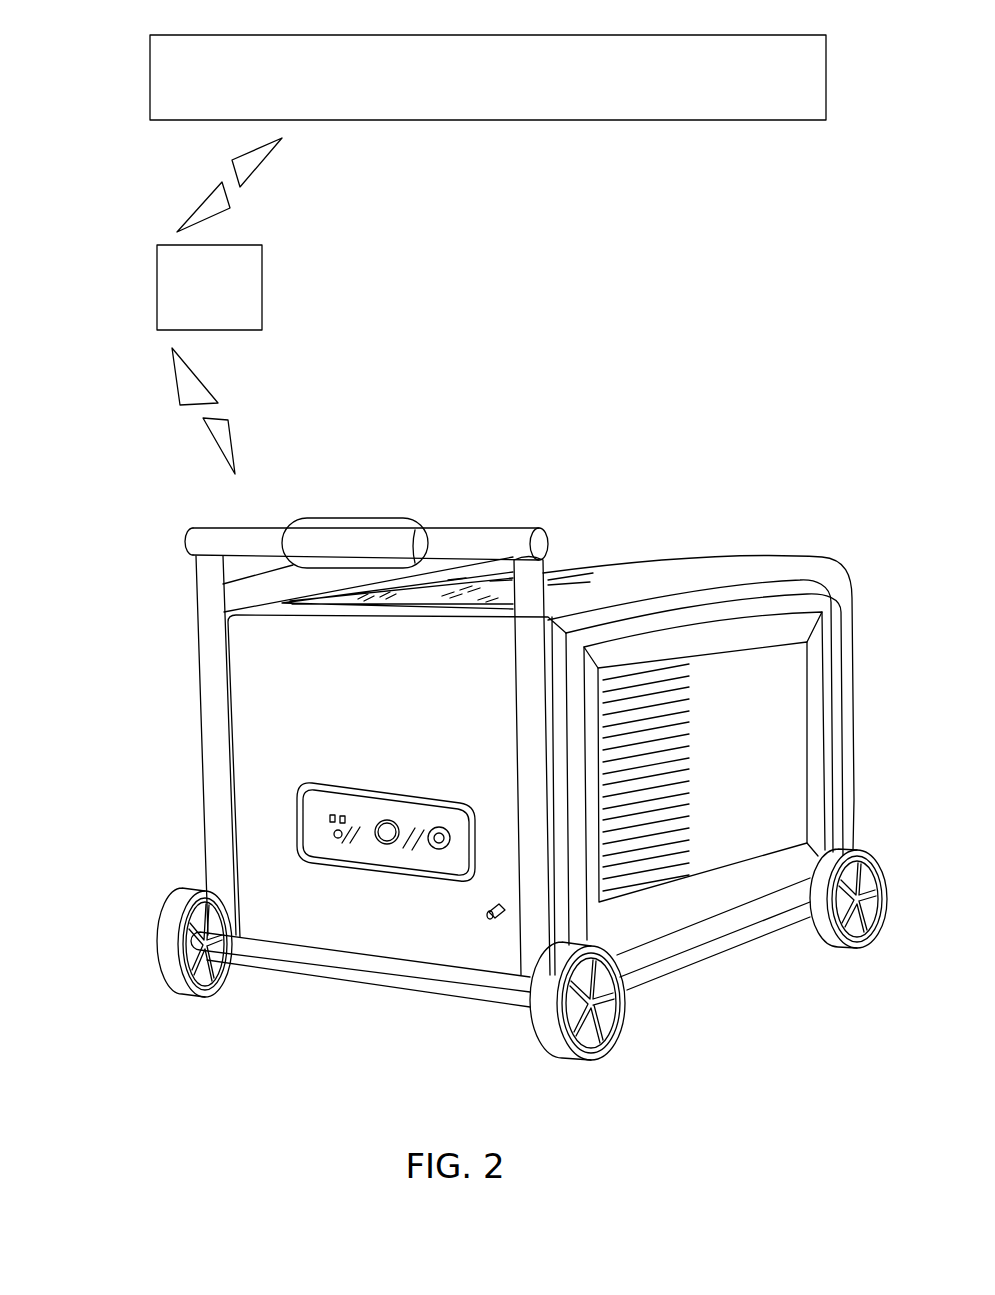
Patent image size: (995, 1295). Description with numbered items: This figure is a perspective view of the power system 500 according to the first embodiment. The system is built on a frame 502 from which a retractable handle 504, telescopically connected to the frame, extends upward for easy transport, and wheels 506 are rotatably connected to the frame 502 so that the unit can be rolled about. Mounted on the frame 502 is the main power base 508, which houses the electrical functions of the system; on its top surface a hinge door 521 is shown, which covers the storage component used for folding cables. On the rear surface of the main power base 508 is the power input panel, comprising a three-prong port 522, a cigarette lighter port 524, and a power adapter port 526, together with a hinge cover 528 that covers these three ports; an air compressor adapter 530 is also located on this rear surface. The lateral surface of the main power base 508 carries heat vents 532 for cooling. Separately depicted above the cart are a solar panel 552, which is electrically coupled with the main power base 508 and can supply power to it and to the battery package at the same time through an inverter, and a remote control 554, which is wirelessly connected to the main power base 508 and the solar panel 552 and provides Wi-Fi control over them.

The power system 500 is at (80, 33).
The solar panel 552 is at (488, 77).
The remote control 554 is at (209, 287).
The retractable handle 504 is at (218, 538).
The hinge door 521 is at (430, 596).
The main power base 508 is at (297, 680).
The frame 502 is at (207, 732).
The 3-prong port 522 is at (300, 827).
The wheels 506 is at (173, 918).
The hinge cover 528 is at (338, 855).
The cigarette lighter port 524 is at (380, 843).
The power adapter port 526 is at (435, 845).
The air compressor adapter 530 is at (501, 920).
The heat vents 532 is at (653, 848).